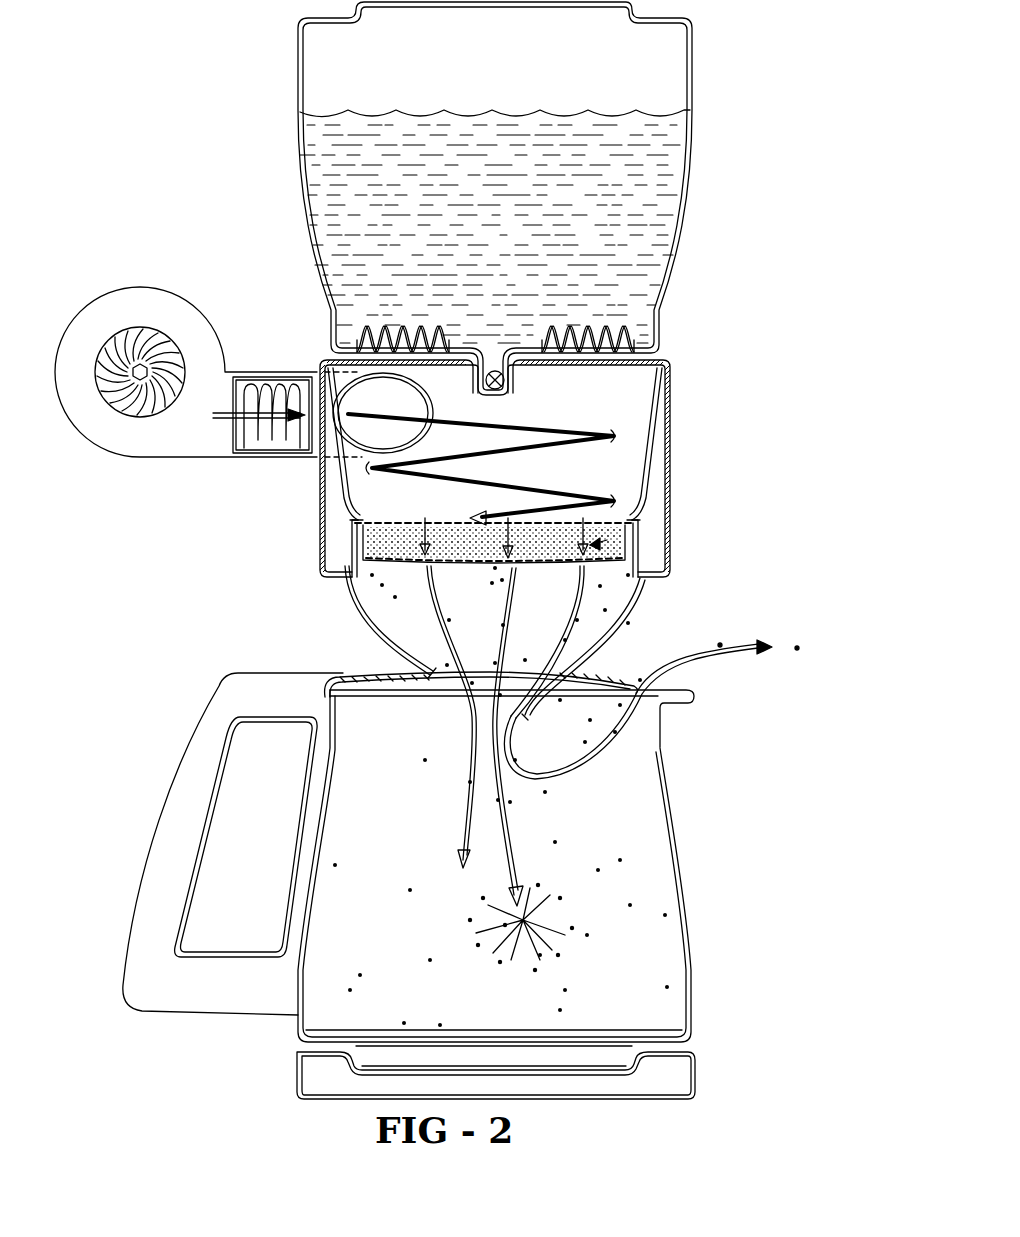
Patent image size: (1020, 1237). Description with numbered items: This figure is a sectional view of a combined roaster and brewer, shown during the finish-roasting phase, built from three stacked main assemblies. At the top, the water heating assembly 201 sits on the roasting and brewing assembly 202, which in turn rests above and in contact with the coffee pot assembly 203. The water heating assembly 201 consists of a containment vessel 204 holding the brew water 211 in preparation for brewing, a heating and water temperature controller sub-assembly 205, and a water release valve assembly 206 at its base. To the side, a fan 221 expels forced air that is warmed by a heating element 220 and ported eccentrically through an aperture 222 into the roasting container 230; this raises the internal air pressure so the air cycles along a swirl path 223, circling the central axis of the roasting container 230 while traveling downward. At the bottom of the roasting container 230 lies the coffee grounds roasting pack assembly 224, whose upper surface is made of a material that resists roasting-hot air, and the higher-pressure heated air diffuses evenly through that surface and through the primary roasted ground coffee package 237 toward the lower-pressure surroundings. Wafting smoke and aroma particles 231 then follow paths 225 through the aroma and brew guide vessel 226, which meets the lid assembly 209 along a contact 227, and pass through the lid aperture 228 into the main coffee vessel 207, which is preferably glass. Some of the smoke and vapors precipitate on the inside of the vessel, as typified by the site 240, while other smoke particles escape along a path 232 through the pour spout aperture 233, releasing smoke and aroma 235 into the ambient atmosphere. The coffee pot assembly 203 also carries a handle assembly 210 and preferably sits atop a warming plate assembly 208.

The water heating assembly 201 is at (569, 198).
The containment vessel 204 is at (693, 90).
The brew water 211 is at (648, 288).
The heating and water temperature controller sub-assembly 205 is at (637, 334).
The water release valve assembly 206 is at (508, 378).
The roasting and brewing assembly 202 is at (540, 468).
The roasting container 230 is at (648, 508).
The heating element 220 is at (290, 375).
The fan 221 is at (143, 302).
The aperture 222 is at (366, 432).
The swirl path 223 is at (538, 452).
The coffee grounds roasting pack assembly 224 is at (462, 520).
The primary roasted ground coffee package 237 is at (633, 540).
The paths 225 is at (514, 632).
The aroma and brew guide vessel 226 is at (613, 617).
The contact 227 is at (425, 673).
The lid aperture 228 is at (517, 718).
The lid assembly 209 is at (598, 674).
The path 232 is at (776, 655).
The pour spout aperture 233 is at (647, 706).
The smoke and aroma 235 is at (797, 648).
The wafting smoke and aroma particles 231 is at (382, 585).
The coffee pot assembly 203 is at (463, 864).
The main coffee vessel 207 is at (690, 915).
The warming plate assembly 208 is at (693, 1082).
The handle assembly 210 is at (192, 752).
The site 240 is at (495, 928).